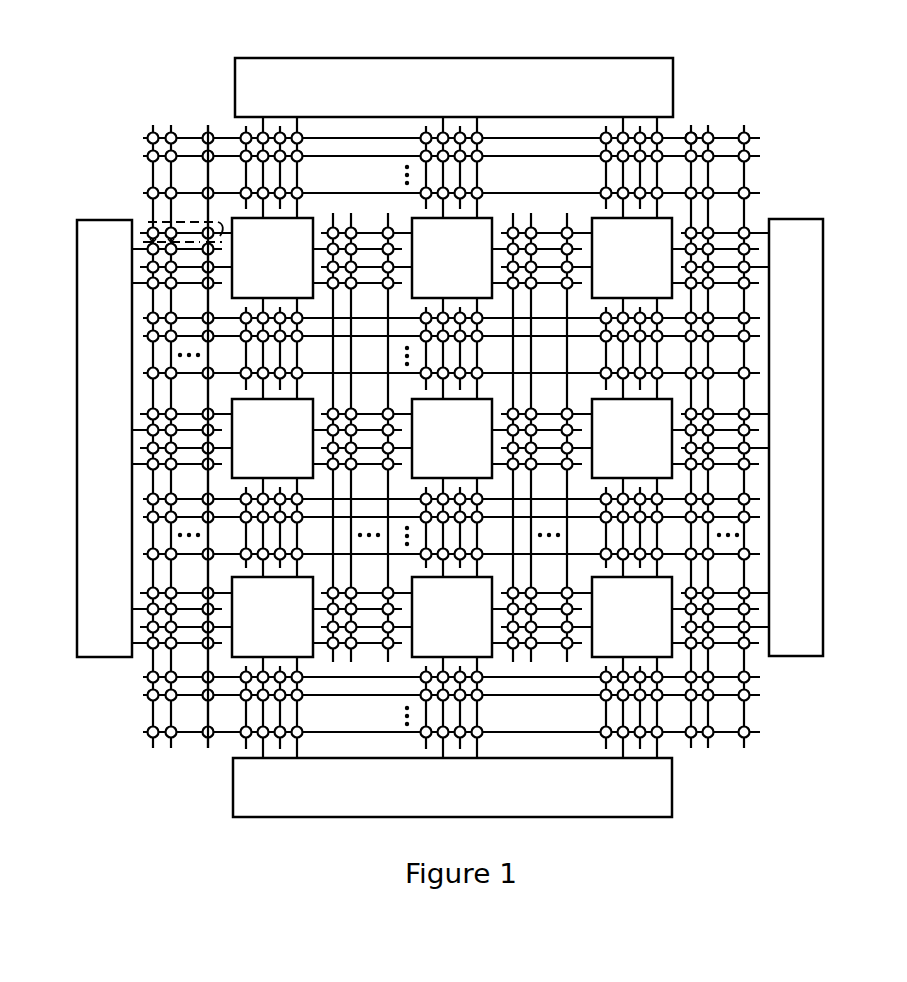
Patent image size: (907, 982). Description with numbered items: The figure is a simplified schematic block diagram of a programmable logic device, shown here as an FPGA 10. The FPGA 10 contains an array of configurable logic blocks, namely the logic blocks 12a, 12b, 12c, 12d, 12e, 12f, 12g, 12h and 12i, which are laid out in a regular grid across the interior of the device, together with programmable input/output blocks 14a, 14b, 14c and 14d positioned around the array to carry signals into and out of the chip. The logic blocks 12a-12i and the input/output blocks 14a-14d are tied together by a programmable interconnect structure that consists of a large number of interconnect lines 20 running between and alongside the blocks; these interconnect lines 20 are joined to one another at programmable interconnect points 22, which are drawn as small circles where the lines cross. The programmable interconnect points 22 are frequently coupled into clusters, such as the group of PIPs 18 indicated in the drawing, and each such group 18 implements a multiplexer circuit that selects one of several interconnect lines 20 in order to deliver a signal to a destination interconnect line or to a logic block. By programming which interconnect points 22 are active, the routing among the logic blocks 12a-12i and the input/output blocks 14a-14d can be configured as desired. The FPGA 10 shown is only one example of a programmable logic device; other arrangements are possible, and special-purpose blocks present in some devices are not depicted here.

The FPGA 10 is at (842, 113).
The configurable logic block 12a is at (254, 282).
The configurable logic block 12b is at (434, 282).
The configurable logic block 12c is at (614, 282).
The configurable logic block 12d is at (254, 463).
The configurable logic block 12e is at (434, 463).
The configurable logic block 12f is at (616, 463).
The configurable logic block 12g is at (254, 641).
The configurable logic block 12h is at (434, 641).
The configurable logic block 12i is at (618, 641).
The programmable input/output block 14a is at (437, 111).
The programmable input/output block 14b is at (779, 460).
The programmable input/output block 14c is at (435, 810).
The programmable input/output block 14d is at (87, 460).
The group of PIPs 18 is at (139, 233).
The interconnect lines 20 is at (205, 172).
The programmable interconnect points 22 is at (692, 132).